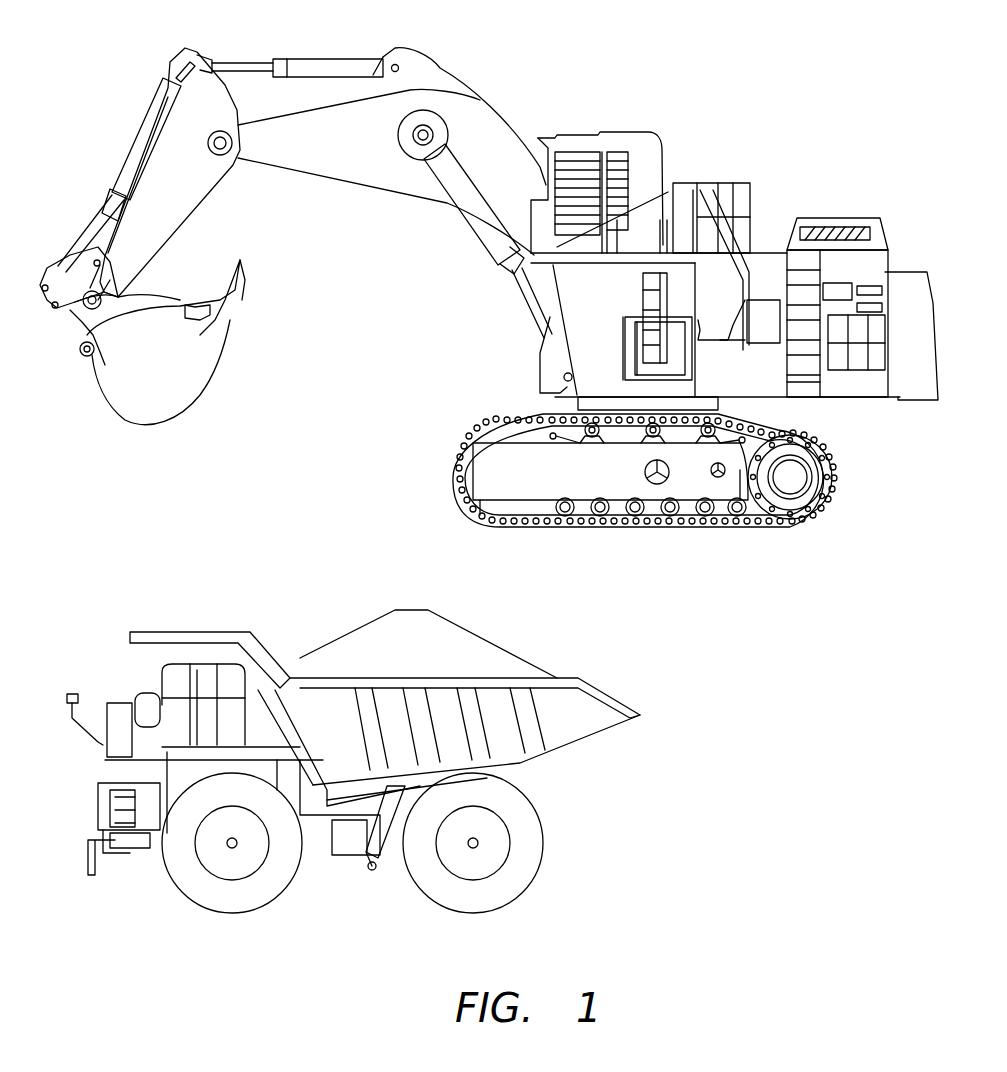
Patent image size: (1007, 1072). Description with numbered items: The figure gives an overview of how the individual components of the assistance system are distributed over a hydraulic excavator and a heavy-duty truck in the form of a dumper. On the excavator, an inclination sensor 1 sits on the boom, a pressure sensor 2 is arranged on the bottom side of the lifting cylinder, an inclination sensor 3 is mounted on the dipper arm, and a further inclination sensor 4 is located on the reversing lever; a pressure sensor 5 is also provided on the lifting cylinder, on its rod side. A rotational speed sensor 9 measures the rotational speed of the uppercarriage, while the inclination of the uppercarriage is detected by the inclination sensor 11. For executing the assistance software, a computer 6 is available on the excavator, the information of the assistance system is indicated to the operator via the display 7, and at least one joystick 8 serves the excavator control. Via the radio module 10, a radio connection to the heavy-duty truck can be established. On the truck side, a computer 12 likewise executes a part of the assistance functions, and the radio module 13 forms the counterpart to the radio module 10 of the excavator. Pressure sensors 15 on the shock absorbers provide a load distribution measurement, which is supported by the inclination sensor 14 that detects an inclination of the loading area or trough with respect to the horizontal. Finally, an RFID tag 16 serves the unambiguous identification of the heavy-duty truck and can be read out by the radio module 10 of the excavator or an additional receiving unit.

The inclination sensor 1 is at (292, 152).
The pressure sensor 2 is at (448, 121).
The inclination sensor 3 is at (179, 210).
The inclination sensor 4 is at (56, 270).
The stick cylinder sensor position 5 is at (503, 272).
The computer 6 is at (659, 200).
The display 7 is at (659, 208).
The joystick 8 is at (659, 216).
The rotational speed sensor 9 is at (739, 363).
The radio module 10 is at (546, 315).
The inclination sensor 11 is at (584, 351).
The computer 12 is at (206, 637).
The radio module 13 is at (232, 698).
The inclination sensor 14 is at (288, 742).
The pressure sensors 15 is at (517, 802).
The RFID tag 16 is at (124, 775).